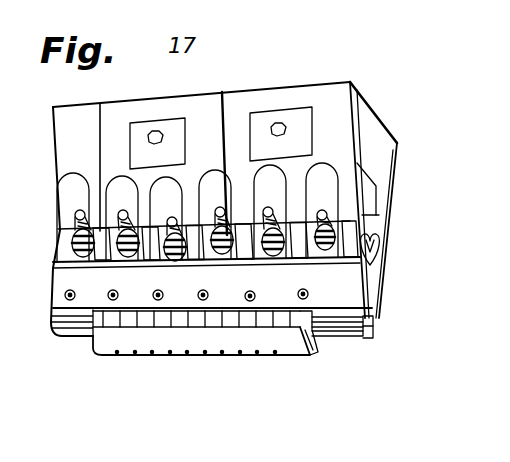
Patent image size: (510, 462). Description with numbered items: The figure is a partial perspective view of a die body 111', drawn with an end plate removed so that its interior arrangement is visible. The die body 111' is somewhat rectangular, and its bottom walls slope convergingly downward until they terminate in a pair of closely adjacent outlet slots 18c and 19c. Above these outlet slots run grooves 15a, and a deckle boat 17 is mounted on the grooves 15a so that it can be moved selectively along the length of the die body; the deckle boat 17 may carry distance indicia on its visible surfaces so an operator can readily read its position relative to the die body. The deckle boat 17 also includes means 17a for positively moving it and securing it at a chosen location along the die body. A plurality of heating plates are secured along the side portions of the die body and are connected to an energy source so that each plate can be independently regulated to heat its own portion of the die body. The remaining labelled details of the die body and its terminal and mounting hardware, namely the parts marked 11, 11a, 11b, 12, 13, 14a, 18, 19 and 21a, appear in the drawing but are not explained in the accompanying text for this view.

The housing 11 is at (355, 83).
The die body 111' is at (394, 200).
The side wall 11b is at (385, 160).
The side wall inner panel 11a is at (375, 198).
The ledge 12 is at (379, 214).
The mounting nuts 13 is at (268, 130).
The terminal screws 14a is at (268, 212).
The grooves 15a is at (366, 321).
The deckle boat 17 is at (262, 364).
The means for positively moving and securing the deckle boat 17a is at (225, 306).
The latch 18 is at (378, 254).
The outlet slot 18c is at (370, 326).
The spring 19 is at (372, 243).
The outlet slot 19c is at (357, 334).
The rivets 21a is at (213, 360).